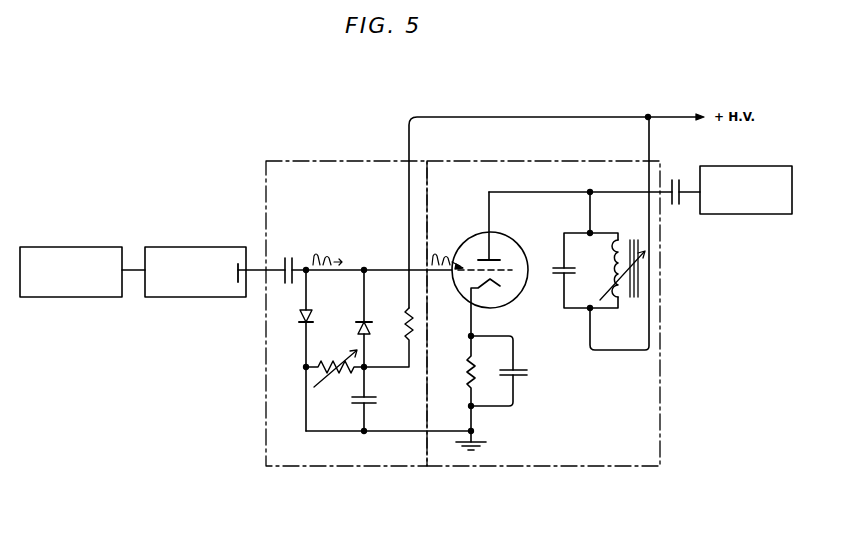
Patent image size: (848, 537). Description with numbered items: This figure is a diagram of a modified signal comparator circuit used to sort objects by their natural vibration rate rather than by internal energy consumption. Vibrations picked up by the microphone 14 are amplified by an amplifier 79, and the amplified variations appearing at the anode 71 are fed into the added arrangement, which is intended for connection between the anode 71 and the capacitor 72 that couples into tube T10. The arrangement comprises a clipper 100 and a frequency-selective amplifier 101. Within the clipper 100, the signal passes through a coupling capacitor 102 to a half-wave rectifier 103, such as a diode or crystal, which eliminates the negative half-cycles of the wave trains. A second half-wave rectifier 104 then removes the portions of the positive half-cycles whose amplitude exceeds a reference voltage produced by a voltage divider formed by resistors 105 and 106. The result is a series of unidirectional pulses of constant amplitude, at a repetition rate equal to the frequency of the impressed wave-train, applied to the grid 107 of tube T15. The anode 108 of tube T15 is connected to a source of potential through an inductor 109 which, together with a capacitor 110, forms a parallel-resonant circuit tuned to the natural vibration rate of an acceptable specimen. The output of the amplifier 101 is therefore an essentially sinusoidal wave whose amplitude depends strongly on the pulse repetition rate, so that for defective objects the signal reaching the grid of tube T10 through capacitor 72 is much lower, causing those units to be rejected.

The microphone 14 is at (84, 297).
The amplifier 79 is at (206, 297).
The anode 71 is at (236, 266).
The clipper 100 is at (350, 170).
The frequency-selective amplifier 101 is at (546, 168).
The coupling capacitor 102 is at (289, 257).
The half-wave rectifier 103 is at (307, 309).
The second half-wave rectifier 104 is at (378, 320).
The resistor 105 is at (322, 384).
The resistor 106 is at (418, 325).
The grid 107 is at (508, 263).
The anode 108 is at (501, 257).
The inductor 109 is at (632, 301).
The capacitor 110 is at (556, 277).
The tube T15 is at (476, 234).
The coupling condenser 72 is at (677, 208).
The tube T10 is at (746, 190).